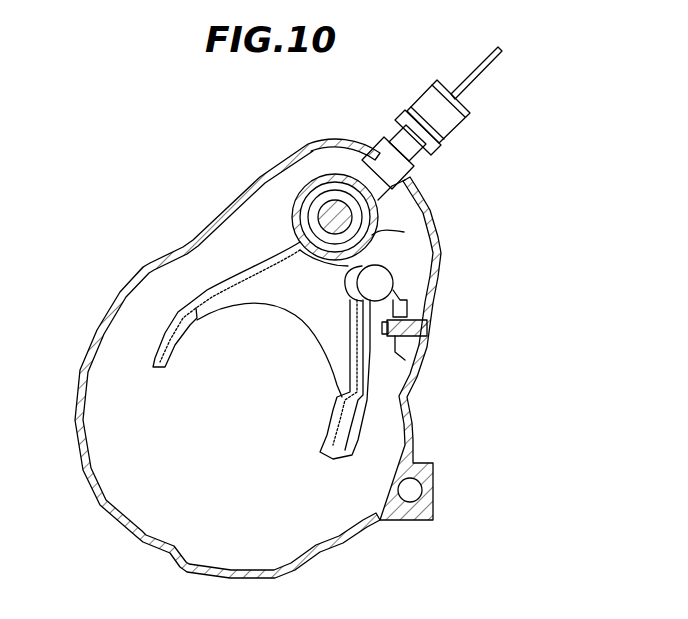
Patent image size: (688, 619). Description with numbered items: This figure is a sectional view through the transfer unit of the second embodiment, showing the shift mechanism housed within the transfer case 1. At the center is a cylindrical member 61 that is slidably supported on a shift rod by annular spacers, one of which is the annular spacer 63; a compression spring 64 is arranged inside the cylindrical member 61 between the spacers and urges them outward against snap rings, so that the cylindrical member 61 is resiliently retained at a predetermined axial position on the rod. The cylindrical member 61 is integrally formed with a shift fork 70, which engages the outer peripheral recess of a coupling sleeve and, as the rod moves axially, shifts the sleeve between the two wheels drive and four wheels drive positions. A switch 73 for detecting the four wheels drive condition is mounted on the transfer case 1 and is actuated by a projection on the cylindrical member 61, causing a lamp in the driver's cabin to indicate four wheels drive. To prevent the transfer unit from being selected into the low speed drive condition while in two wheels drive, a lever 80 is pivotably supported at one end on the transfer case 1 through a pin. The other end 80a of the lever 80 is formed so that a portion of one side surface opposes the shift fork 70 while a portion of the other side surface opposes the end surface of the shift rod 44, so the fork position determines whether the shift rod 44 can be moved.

The transfer case 1 is at (281, 164).
The shift rod 44 is at (396, 280).
The cylindrical member 61 is at (376, 223).
The annular spacer 63 is at (322, 203).
The compression spring 64 is at (338, 186).
The shift fork 70 is at (197, 307).
The switch 73 is at (460, 124).
The lever 80 is at (426, 304).
The other end of lever 80a is at (313, 321).